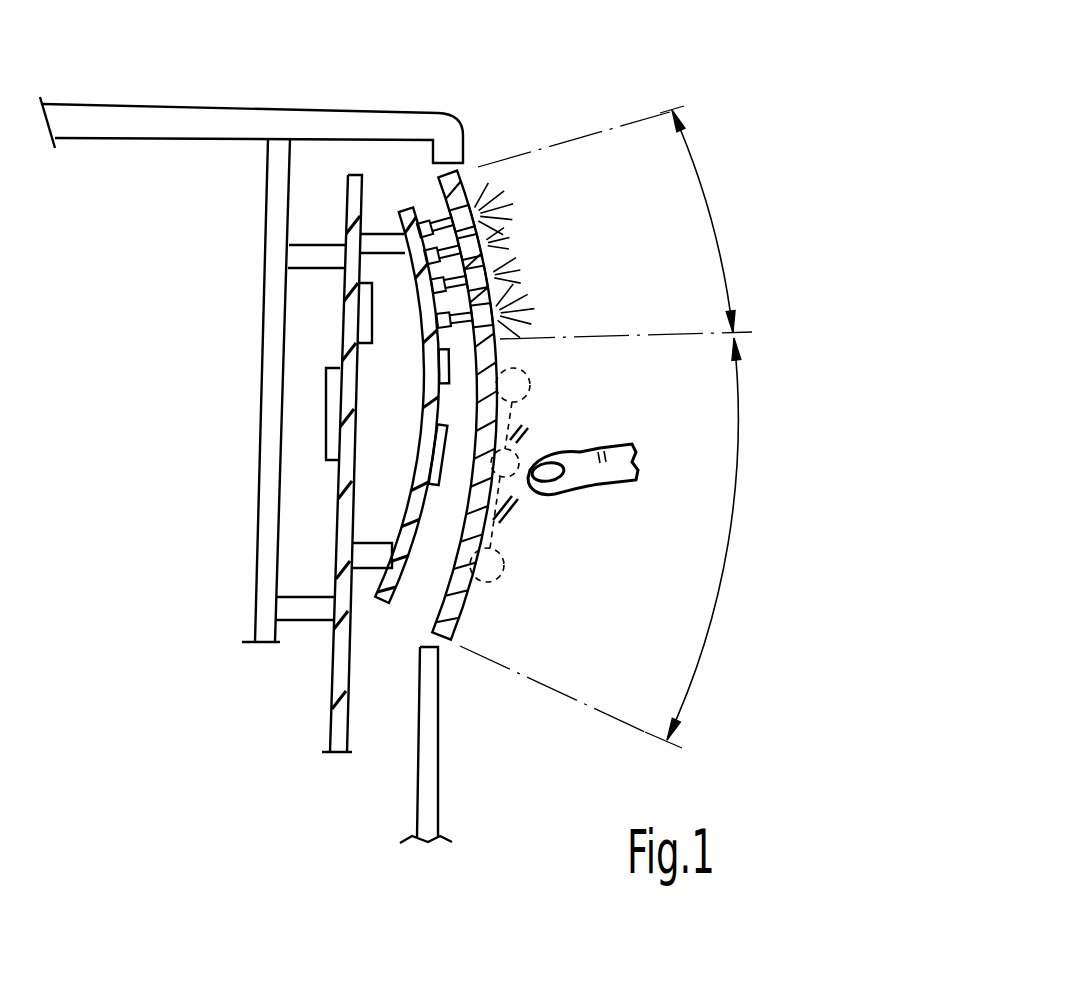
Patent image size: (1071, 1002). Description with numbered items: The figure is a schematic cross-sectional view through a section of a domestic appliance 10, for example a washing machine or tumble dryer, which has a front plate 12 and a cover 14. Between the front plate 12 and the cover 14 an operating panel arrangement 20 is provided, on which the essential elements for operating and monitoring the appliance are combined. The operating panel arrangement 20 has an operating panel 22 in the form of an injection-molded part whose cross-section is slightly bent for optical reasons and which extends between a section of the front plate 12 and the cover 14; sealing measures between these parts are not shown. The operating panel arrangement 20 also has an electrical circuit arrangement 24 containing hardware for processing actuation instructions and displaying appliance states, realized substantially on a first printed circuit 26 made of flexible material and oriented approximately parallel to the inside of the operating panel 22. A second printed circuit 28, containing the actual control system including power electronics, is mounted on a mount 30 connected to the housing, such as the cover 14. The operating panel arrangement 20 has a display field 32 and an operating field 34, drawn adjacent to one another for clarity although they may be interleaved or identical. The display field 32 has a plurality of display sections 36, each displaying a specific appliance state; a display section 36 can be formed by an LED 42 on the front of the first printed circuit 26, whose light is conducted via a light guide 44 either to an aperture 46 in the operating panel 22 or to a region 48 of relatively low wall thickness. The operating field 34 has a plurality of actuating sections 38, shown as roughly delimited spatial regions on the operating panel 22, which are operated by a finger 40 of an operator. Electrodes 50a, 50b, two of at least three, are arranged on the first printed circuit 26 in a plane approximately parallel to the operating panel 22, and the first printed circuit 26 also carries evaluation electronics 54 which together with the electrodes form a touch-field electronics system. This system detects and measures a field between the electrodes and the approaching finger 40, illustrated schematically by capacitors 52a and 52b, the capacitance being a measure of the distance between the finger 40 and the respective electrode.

The domestic appliance 10 is at (837, 121).
The front plate 12 is at (428, 777).
The cover 14 is at (131, 123).
The operating panel arrangement 20 is at (584, 113).
The operating panel 22 is at (453, 573).
The electrical circuit arrangement 24 is at (412, 172).
The first printed circuit 26 is at (412, 495).
The second printed circuit 28 is at (345, 656).
The mount 30 is at (273, 373).
The display field 32 is at (725, 232).
The operating field 34 is at (720, 562).
The display section 36 is at (488, 208).
The actuating section 38 is at (515, 378).
The finger 40 is at (633, 483).
The LED 42 is at (440, 220).
The light guide 44 is at (440, 205).
The aperture 46 is at (488, 215).
The region of relatively low wall thickness 48 is at (490, 254).
The electrode 50a is at (432, 362).
The electrode 50b is at (393, 607).
The capacitor 52a is at (520, 416).
The capacitor 52b is at (490, 510).
The evaluation electronics 54 is at (440, 448).